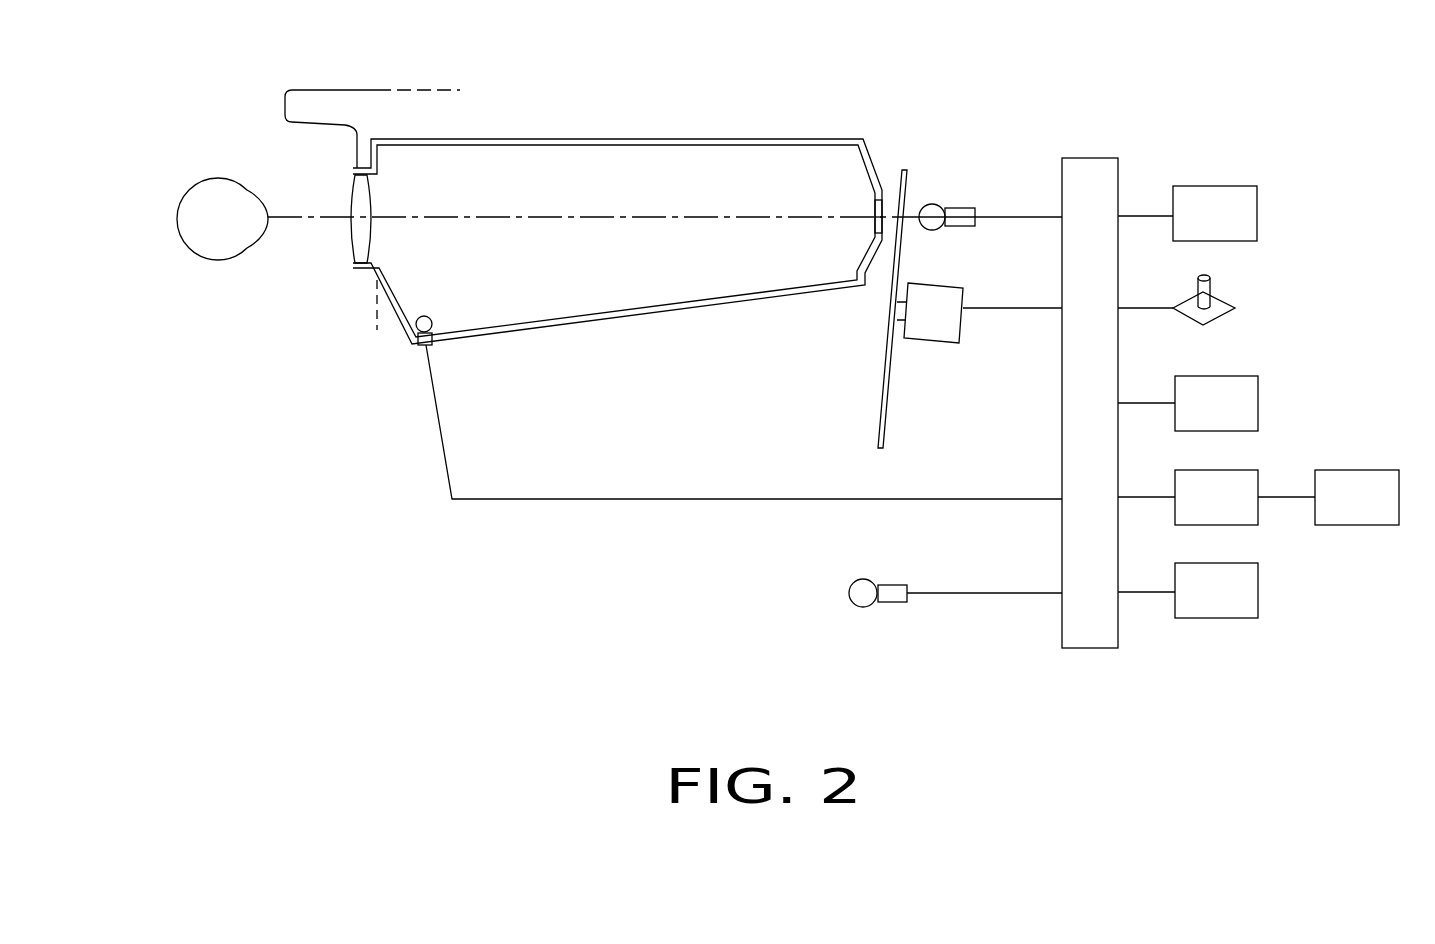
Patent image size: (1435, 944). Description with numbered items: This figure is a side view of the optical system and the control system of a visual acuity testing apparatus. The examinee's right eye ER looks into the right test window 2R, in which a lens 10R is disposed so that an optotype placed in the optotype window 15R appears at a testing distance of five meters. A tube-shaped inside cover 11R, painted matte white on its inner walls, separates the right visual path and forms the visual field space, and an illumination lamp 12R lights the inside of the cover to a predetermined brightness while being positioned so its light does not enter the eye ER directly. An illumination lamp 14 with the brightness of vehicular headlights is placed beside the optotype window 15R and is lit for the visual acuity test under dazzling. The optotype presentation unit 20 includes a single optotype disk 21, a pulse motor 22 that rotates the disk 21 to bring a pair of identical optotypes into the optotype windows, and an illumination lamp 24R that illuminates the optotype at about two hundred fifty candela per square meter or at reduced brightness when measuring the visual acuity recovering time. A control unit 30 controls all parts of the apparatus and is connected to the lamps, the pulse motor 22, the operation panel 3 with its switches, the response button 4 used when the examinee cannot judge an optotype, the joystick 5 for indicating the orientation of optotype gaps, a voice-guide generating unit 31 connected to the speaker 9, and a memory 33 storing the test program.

The right eye ER is at (212, 259).
The right test window 2R is at (330, 166).
The lens 10R is at (357, 234).
The inside cover 11R is at (722, 139).
The illumination lamp 12R is at (433, 343).
The optotype window 15R is at (862, 228).
The illumination lamp 24R is at (953, 210).
The optotype disk 21 is at (885, 430).
The pulse motor 22 is at (942, 335).
The optotype presentation unit 20 is at (1032, 145).
The control unit 30 is at (1088, 158).
The operation panel 3 is at (1236, 186).
The joystick 5 is at (1222, 292).
The response button 4 is at (1240, 376).
The voice-guide generating unit 31 is at (1245, 470).
The speaker 9 is at (1397, 525).
The memory 33 is at (1222, 620).
The illumination lamp 14 is at (893, 584).